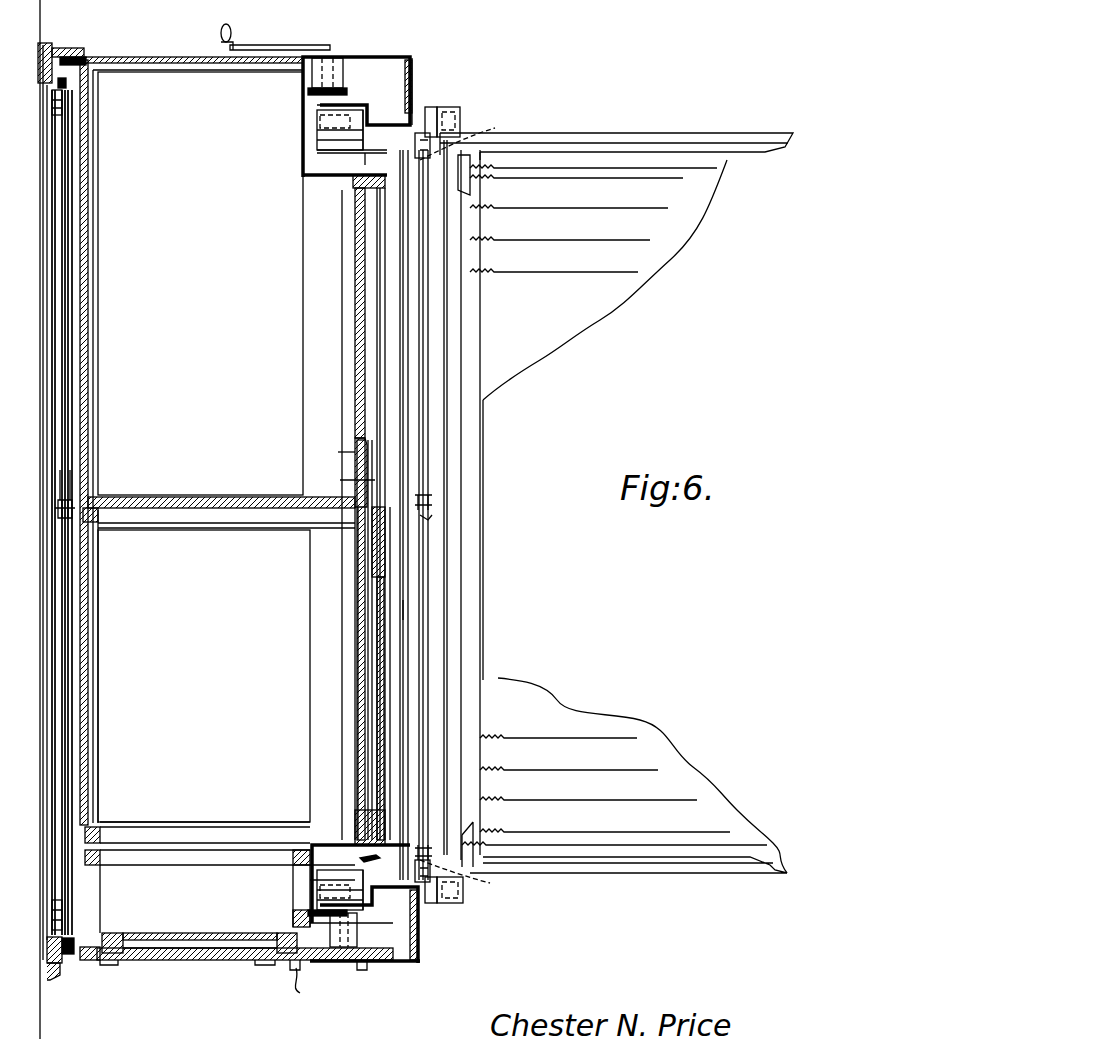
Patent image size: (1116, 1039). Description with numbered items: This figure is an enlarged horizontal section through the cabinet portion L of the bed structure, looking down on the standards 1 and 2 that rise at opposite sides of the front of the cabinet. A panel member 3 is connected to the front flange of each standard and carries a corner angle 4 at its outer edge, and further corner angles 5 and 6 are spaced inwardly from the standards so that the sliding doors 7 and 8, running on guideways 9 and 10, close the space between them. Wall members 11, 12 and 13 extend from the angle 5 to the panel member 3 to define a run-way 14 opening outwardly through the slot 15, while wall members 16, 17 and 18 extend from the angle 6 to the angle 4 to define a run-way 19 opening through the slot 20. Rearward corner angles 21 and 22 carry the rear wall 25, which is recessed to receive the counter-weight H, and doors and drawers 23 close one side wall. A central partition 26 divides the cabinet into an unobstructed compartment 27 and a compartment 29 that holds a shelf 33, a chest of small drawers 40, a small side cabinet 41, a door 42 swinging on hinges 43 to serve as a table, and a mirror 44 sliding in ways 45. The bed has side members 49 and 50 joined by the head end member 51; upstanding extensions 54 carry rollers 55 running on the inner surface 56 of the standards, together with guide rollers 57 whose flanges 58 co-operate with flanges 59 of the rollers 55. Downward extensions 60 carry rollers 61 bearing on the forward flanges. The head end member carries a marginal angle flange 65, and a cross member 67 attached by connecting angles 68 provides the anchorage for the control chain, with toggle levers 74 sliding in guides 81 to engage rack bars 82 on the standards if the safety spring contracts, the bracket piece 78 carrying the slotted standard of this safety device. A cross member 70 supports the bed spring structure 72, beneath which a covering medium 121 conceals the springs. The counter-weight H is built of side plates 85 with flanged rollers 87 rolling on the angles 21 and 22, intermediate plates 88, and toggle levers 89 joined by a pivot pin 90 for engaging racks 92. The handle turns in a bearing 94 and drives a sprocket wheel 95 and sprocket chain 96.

The standard 1 is at (405, 900).
The standard 2 is at (412, 95).
The panel member 3 is at (412, 70).
The corner angle 4 is at (412, 58).
The corner angle 5 is at (400, 840).
The corner angle 6 is at (380, 190).
The sliding door 7 is at (377, 570).
The sliding door 8 is at (176, 1017).
The guideway 9 is at (630, 675).
The guideway 10 is at (372, 530).
The wall member 11 is at (355, 840).
The wall member 12 is at (330, 890).
The wall member 13 is at (500, 740).
The run-way 14 is at (330, 878).
The slot 15 is at (432, 505).
The wall member 16 is at (305, 177).
The wall member 17 is at (317, 128).
The wall member 18 is at (338, 58).
The run-way 19 is at (317, 115).
The slot 20 is at (355, 180).
The corner angle 21 is at (55, 975).
The corner angle 22 is at (52, 50).
The doors, drawers, etc. 23 is at (492, 772).
The rear wall 25 is at (70, 392).
The central partition 26 is at (223, 497).
The compartment 27 is at (200, 283).
The compartment 29 is at (204, 676).
The shelf 33 is at (231, 33).
The chest of small drawers 40 is at (205, 899).
The small side cabinet 41 is at (380, 955).
The door 42 is at (168, 960).
The hinges 43 is at (122, 965).
The mirror 44 is at (165, 933).
The ways 45 is at (112, 935).
The side member 49 is at (583, 873).
The side member 50 is at (595, 145).
The head end member 51 is at (461, 442).
The upstanding extension 54 is at (317, 140).
The roller 55 is at (395, 125).
The inner surface 56 is at (370, 110).
The guide roller 57 is at (362, 108).
The flange 58 is at (317, 112).
The flange 59 is at (340, 153).
The extension 60 is at (460, 118).
The roller 61 is at (437, 112).
The reinforcing marginal angle flange 65 is at (473, 637).
The cross member 67 is at (403, 610).
The connecting angles 68 is at (468, 505).
The cross member 70 is at (472, 541).
The bed spring structure 72 is at (605, 476).
The toggle levers 74 is at (447, 426).
The bracket piece 78 is at (432, 517).
The guides 81 is at (425, 158).
The rack bars 82 is at (368, 160).
The side plate 85 is at (55, 580).
The flanged rollers 87 is at (62, 106).
The plates 88 is at (72, 328).
The toggle levers 89 is at (65, 268).
The pivot pin 90 is at (72, 505).
The racks 92 is at (66, 83).
The bearing 94 is at (343, 88).
The sprocket wheel 95 is at (345, 100).
The sprocket chain 96 is at (390, 57).
The canvas or covering medium 121 is at (665, 768).
The counter-weight H is at (65, 475).
The cabinet portion L is at (247, 383).